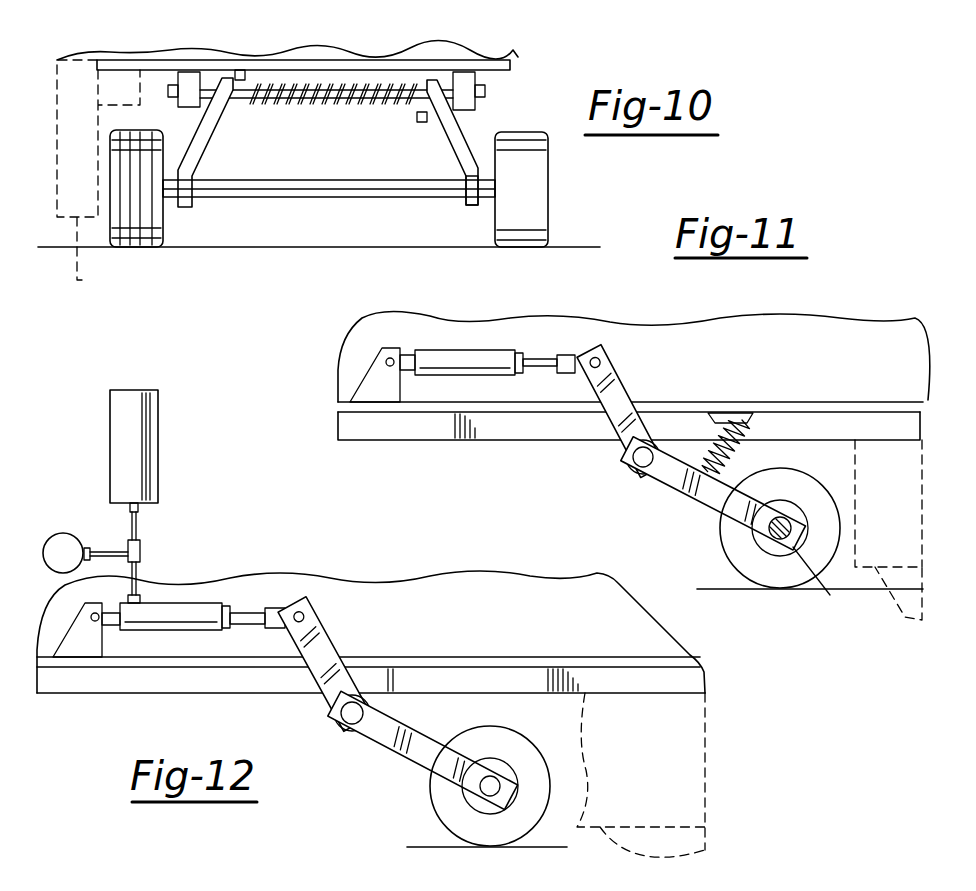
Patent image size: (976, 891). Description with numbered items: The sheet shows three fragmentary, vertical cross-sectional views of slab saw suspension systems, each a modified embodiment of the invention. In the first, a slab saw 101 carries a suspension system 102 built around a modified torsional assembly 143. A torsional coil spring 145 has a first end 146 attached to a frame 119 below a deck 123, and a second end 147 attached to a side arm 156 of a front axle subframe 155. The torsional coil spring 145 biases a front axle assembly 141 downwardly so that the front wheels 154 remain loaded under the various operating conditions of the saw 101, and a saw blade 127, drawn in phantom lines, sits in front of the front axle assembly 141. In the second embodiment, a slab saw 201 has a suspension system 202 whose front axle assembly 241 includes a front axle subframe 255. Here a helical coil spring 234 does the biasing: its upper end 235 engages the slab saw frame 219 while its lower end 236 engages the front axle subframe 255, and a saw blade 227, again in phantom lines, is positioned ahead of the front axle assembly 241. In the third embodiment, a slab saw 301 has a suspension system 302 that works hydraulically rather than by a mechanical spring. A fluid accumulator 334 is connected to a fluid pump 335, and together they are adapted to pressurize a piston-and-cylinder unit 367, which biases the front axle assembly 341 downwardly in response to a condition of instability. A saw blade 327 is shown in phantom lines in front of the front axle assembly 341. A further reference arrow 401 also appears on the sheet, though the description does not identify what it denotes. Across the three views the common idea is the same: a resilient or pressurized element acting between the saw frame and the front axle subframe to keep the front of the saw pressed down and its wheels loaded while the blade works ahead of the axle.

In FIG. 10, the slab saw 101 is at (530, 90).
In FIG. 10, the suspension system 102 is at (160, 95).
In FIG. 10, the frame 119 is at (432, 200).
In FIG. 10, the deck 123 is at (513, 64).
In FIG. 10, the saw blade 127 is at (80, 272).
In FIG. 10, the front axle assembly 141 is at (276, 207).
In FIG. 10, the torsional assembly 143 is at (314, 112).
In FIG. 10, the torsional coil spring 145 is at (364, 104).
In FIG. 10, the first end 146 is at (236, 72).
In FIG. 10, the second end 147 is at (420, 122).
In FIG. 10, the front wheels 154 is at (540, 132).
In FIG. 10, the front axle subframe 155 is at (470, 206).
In FIG. 10, the side arm 156 is at (446, 135).
In FIG. 11, the slab saw 201 is at (806, 332).
In FIG. 11, the suspension system 202 is at (610, 470).
In FIG. 11, the slab saw frame 219 is at (839, 404).
In FIG. 11, the saw blade 227 is at (894, 600).
In FIG. 11, the helical coil spring 234 is at (735, 449).
In FIG. 11, the upper end 235 is at (722, 413).
In FIG. 11, the lower end 236 is at (686, 498).
In FIG. 11, the front axle assembly 241 is at (803, 511).
In FIG. 11, the front axle subframe 255 is at (810, 586).
In FIG. 12, the slab saw 301 is at (174, 522).
In FIG. 12, the suspension system 302 is at (316, 725).
In FIG. 12, the saw blade 327 is at (641, 862).
In FIG. 12, the fluid accumulator 334 is at (160, 391).
In FIG. 12, the fluid pump 335 is at (88, 521).
In FIG. 12, the front axle assembly 341 is at (506, 768).
In FIG. 12, the piston-and-cylinder unit 367 is at (205, 635).
In FIG. 12, the suspension assembly 401 is at (206, 889).